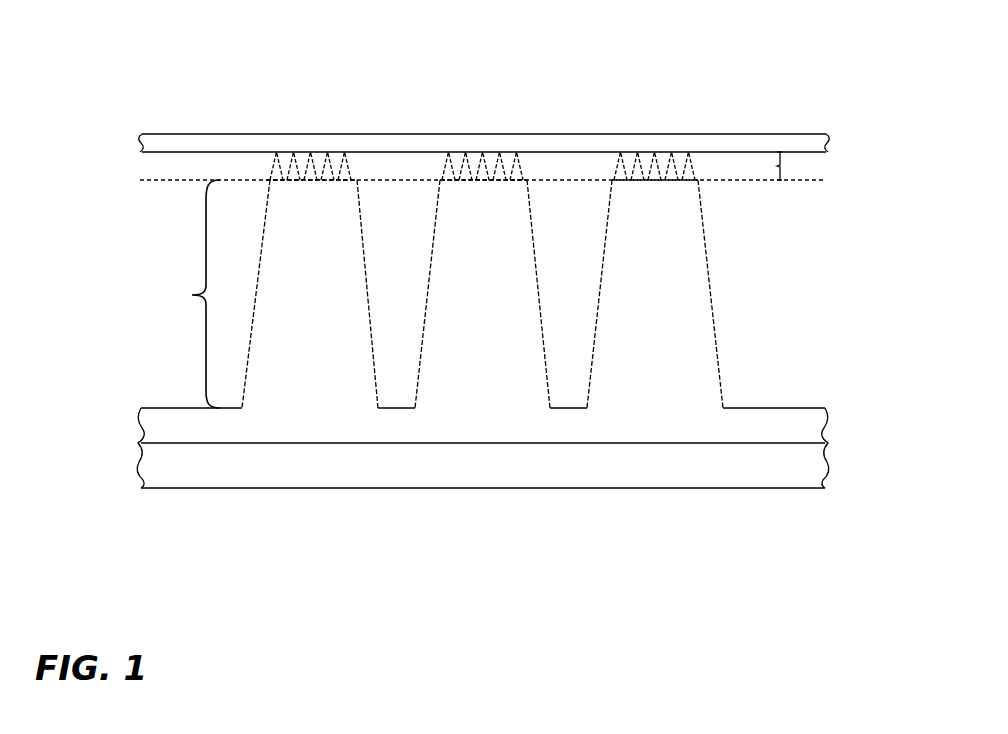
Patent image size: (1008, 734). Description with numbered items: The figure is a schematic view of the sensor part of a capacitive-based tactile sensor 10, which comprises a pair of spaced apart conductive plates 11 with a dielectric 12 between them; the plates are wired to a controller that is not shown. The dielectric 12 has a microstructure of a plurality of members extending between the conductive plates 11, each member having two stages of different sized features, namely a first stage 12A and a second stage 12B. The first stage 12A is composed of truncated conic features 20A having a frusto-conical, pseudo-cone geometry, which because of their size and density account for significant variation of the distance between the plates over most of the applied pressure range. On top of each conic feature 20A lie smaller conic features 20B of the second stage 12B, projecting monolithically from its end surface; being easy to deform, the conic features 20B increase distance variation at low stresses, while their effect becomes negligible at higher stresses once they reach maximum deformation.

The capacitive-based tactile sensor 10 is at (173, 338).
The conductive plates 11 is at (578, 143).
The dielectric 12 is at (476, 239).
The first stage 12A is at (183, 295).
The second stage 12B is at (794, 165).
The conic features 20A is at (327, 323).
The conic features 20B is at (252, 165).